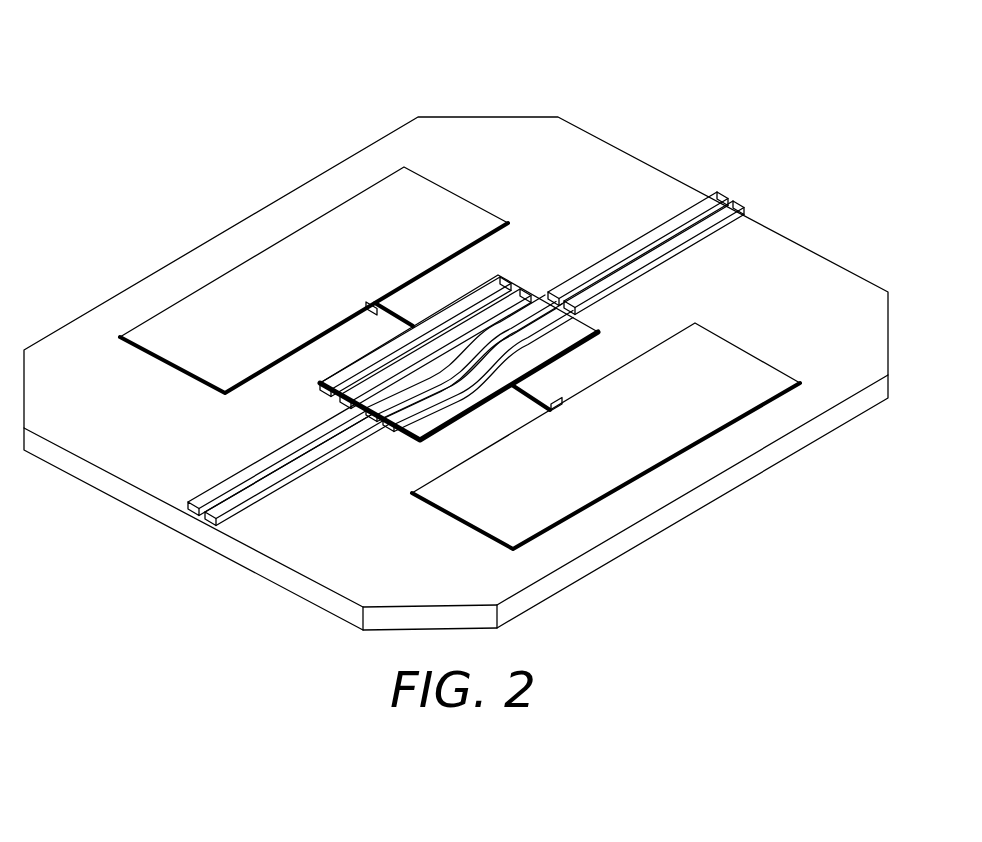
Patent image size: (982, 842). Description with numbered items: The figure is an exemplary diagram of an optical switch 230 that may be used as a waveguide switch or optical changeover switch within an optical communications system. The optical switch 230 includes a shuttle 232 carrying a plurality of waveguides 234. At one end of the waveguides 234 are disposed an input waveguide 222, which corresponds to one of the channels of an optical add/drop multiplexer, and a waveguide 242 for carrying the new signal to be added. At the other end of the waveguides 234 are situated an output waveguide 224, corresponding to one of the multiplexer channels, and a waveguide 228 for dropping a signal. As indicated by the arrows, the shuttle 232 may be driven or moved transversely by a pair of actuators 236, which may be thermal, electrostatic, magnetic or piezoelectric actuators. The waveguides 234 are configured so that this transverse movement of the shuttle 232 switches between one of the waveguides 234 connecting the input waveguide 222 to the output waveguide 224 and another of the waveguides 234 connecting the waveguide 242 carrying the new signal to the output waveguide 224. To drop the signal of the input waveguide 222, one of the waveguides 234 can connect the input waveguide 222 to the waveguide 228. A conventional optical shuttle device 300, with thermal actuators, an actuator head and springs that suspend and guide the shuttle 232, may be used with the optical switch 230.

The optical switch 230 is at (266, 56).
The optical shuttle device 300 is at (256, 237).
The input waveguide 222 is at (740, 200).
The waveguide for carrying the new signal 242 is at (722, 190).
The output waveguide 224 is at (203, 518).
The waveguide for dropping a signal 228 is at (190, 503).
The shuttle 232 is at (585, 333).
The waveguides 234 is at (510, 277).
The actuators 236 is at (565, 392).